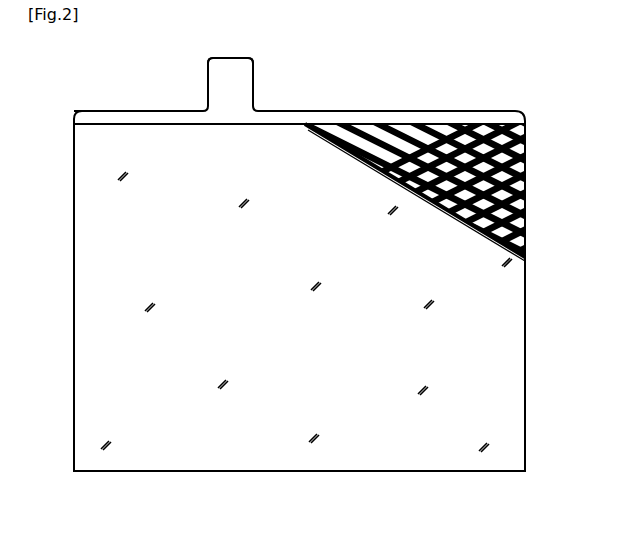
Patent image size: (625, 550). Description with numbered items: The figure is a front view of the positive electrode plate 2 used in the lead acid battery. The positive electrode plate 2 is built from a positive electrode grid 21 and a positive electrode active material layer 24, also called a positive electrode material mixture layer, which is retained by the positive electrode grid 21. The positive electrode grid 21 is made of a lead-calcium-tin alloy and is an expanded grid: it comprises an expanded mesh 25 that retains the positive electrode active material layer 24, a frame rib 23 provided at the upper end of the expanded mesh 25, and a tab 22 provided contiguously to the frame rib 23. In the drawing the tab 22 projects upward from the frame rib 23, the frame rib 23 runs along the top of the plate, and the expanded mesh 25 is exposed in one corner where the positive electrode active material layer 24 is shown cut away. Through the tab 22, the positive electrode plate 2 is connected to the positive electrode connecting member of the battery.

The positive electrode plate 2 is at (387, 110).
The positive electrode grid 21 is at (467, 124).
The tab 22 is at (232, 75).
The frame rib 23 is at (312, 113).
The positive electrode active material layer 24 is at (380, 453).
The expanded mesh 25 is at (348, 125).